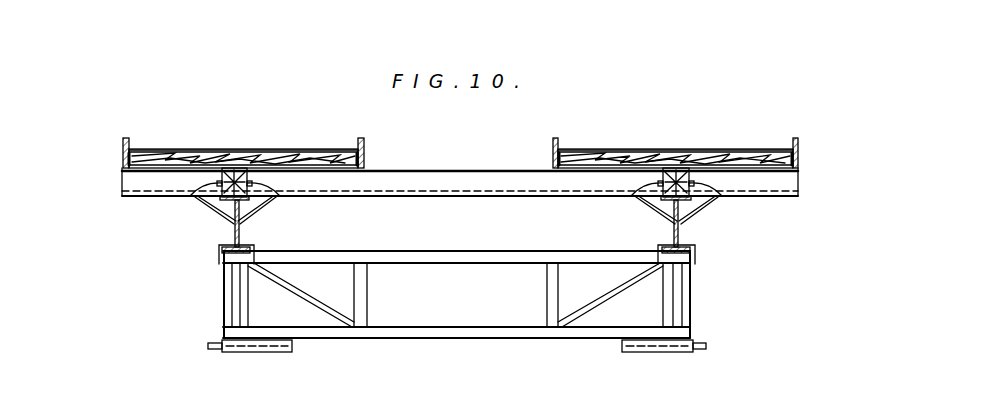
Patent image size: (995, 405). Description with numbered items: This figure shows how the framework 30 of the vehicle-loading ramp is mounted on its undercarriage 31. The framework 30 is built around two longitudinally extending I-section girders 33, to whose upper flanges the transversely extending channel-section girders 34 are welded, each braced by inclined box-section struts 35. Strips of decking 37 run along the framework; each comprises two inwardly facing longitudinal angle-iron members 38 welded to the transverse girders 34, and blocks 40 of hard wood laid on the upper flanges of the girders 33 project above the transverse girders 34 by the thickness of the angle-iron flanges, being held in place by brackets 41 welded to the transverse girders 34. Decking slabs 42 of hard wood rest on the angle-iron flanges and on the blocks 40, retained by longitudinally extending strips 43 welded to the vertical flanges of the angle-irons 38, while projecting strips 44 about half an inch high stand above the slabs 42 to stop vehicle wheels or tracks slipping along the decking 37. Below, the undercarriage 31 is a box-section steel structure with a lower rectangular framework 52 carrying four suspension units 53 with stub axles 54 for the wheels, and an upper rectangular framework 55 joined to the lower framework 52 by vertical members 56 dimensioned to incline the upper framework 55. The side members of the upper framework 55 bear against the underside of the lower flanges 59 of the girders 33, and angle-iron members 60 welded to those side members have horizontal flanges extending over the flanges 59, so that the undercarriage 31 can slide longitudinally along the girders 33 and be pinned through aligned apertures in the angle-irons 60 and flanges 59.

The framework 30 is at (441, 160).
The undercarriage 31 is at (216, 313).
The longitudinally extending I-section girders 33 is at (234, 230).
The transversely extending channel-section girders 34 is at (397, 194).
The inclined box-section struts 35 is at (212, 210).
The strips of decking 37 is at (213, 144).
The longitudinally extending inwardly facing angle-iron members 38 is at (126, 148).
The blocks of hard wood 40 is at (234, 170).
The brackets 41 is at (190, 200).
The decking slabs 42 is at (181, 158).
The longitudinally extending strips 43 is at (134, 156).
The projecting strips 44 is at (277, 152).
The lower rectangular framework 52 is at (420, 338).
The suspension units 53 is at (253, 353).
The stub axles 54 is at (206, 346).
The upper rectangular framework 55 is at (449, 250).
The vertical members 56 is at (245, 310).
The lower flanges 59 is at (230, 262).
The angle-iron members 60 is at (240, 250).